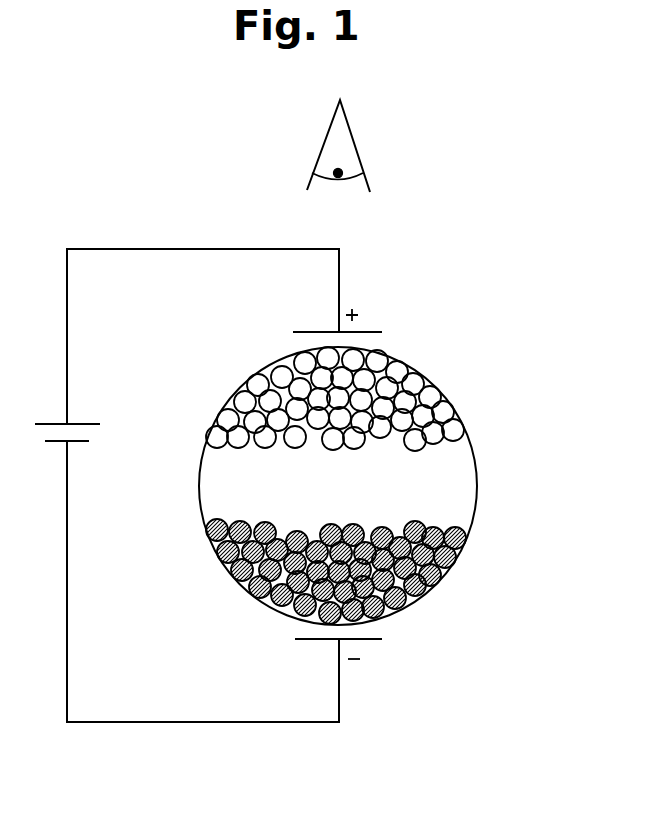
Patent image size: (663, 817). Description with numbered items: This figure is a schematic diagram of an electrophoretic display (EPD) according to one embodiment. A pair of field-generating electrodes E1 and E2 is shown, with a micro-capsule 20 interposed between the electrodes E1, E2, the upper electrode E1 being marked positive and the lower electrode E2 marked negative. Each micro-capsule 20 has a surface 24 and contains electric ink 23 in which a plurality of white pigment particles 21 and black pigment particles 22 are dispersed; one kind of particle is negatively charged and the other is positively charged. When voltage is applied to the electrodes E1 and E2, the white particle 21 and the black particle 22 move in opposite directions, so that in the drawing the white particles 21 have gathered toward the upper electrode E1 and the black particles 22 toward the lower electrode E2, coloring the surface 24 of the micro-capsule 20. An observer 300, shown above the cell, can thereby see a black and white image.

The observer 300 is at (372, 159).
The micro-capsule 20 is at (368, 478).
The white pigment particle 21 is at (463, 428).
The black pigment particle 22 is at (467, 540).
The electric ink 23 is at (465, 482).
The surface 24 is at (477, 510).
The field-generating electrode E1 is at (380, 332).
The field-generating electrode E2 is at (380, 639).